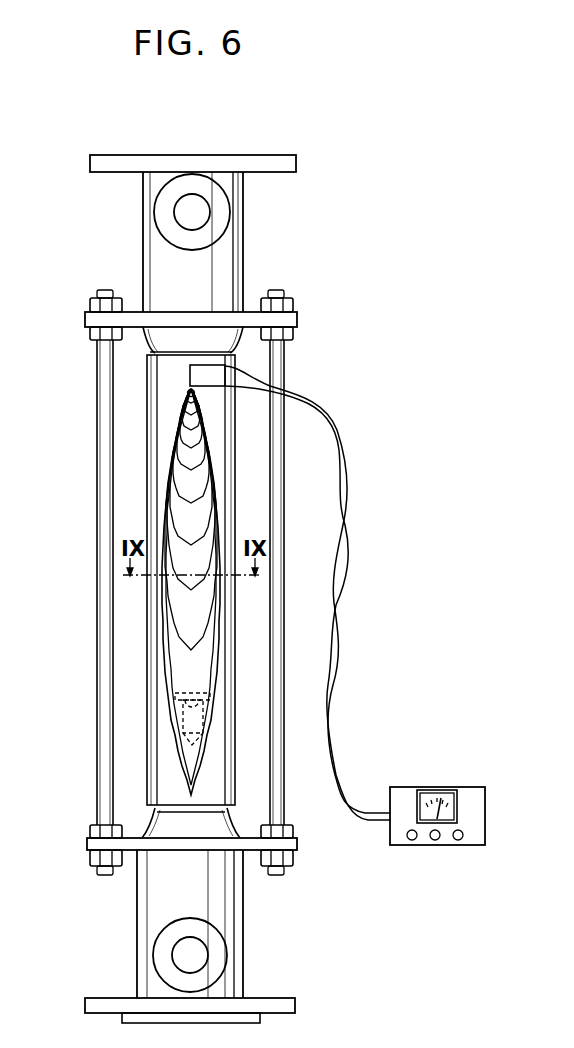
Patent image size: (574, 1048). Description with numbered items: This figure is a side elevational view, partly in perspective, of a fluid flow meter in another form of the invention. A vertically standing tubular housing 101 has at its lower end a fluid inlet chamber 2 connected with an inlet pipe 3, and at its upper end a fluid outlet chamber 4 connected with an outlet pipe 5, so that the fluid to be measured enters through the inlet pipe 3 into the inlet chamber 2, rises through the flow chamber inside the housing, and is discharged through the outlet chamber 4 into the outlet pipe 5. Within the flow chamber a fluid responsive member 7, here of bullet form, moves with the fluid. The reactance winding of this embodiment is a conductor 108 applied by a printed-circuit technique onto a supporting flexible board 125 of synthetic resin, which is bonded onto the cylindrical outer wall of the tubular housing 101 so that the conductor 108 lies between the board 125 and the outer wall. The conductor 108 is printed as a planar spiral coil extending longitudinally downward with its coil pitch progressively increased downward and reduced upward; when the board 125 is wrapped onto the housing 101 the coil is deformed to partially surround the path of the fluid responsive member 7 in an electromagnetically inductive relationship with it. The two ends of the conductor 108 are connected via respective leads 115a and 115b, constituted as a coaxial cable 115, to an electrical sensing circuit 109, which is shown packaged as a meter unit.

The fluid inlet chamber 2 is at (230, 906).
The inlet pipe 3 is at (203, 960).
The fluid outlet chamber 4 is at (230, 264).
The outlet pipe 5 is at (203, 213).
The fluid responsive member 7 is at (180, 720).
The tubular housing 101 is at (148, 633).
The conductor 108 is at (190, 470).
The electrical sensing circuit 109 is at (430, 779).
The coaxial cable 115 is at (337, 593).
The lead 115a is at (330, 409).
The lead 115b is at (340, 438).
The supporting flexible board 125 is at (233, 447).